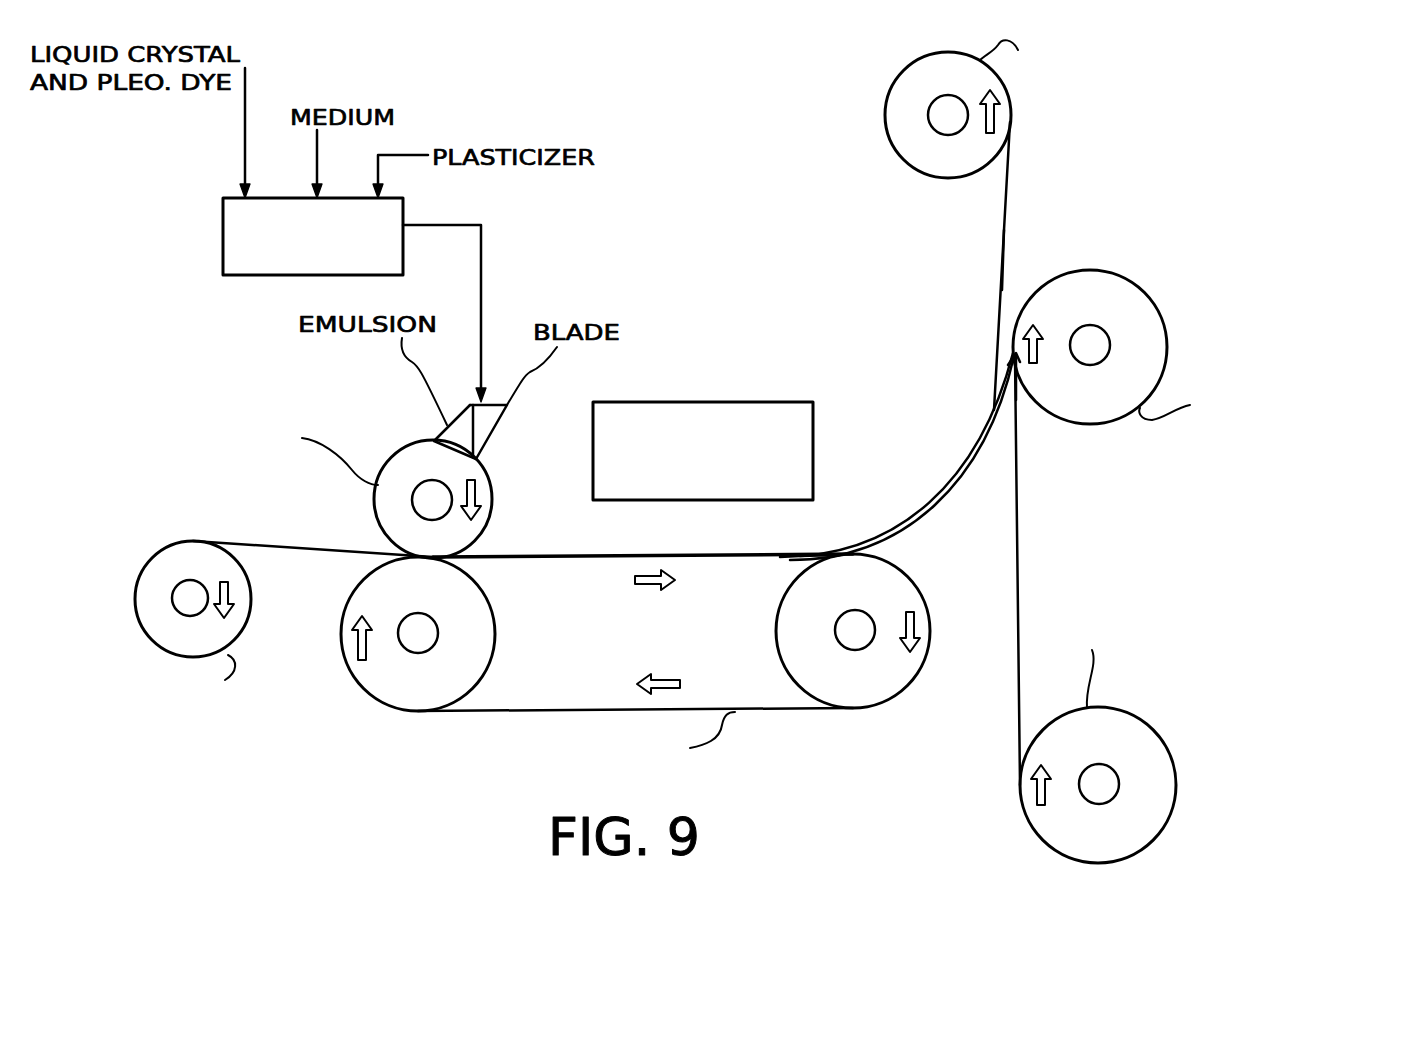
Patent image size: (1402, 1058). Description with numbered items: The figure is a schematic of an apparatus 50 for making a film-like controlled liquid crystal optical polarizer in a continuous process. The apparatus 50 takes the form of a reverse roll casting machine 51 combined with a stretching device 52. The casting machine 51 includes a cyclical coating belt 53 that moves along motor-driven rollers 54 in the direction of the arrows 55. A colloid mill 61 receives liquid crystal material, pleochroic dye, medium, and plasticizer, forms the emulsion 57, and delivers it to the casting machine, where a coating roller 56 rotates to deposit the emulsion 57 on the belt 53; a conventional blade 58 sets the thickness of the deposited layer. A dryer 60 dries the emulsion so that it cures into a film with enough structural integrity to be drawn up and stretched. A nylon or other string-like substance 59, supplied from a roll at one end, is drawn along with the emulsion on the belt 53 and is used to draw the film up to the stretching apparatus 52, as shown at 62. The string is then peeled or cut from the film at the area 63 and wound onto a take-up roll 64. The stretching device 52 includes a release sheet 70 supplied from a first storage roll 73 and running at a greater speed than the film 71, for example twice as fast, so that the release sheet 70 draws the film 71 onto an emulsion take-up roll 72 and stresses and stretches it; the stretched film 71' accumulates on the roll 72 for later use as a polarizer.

The apparatus 50 is at (843, 408).
The reverse roll casting machine 51 is at (587, 546).
The stretching device 52 is at (974, 301).
The coating belt 53 is at (503, 711).
The rollers 54 is at (487, 630).
The arrows 55 is at (650, 590).
The coating roller 56 is at (400, 448).
The emulsion 57 is at (447, 427).
The blade 58 is at (497, 425).
The string-like substance 59 is at (270, 547).
The dryer 60 is at (697, 402).
The colloid mill 61 is at (223, 235).
The film drawn up by string 62 is at (921, 498).
The area 63 is at (984, 408).
The take-up roll 64 is at (950, 177).
The release sheet 70 is at (1016, 562).
The film 71 is at (982, 368).
The film 71' is at (1044, 409).
The emulsion take-up roll 72 is at (1123, 283).
The first storage roll 73 is at (1150, 733).